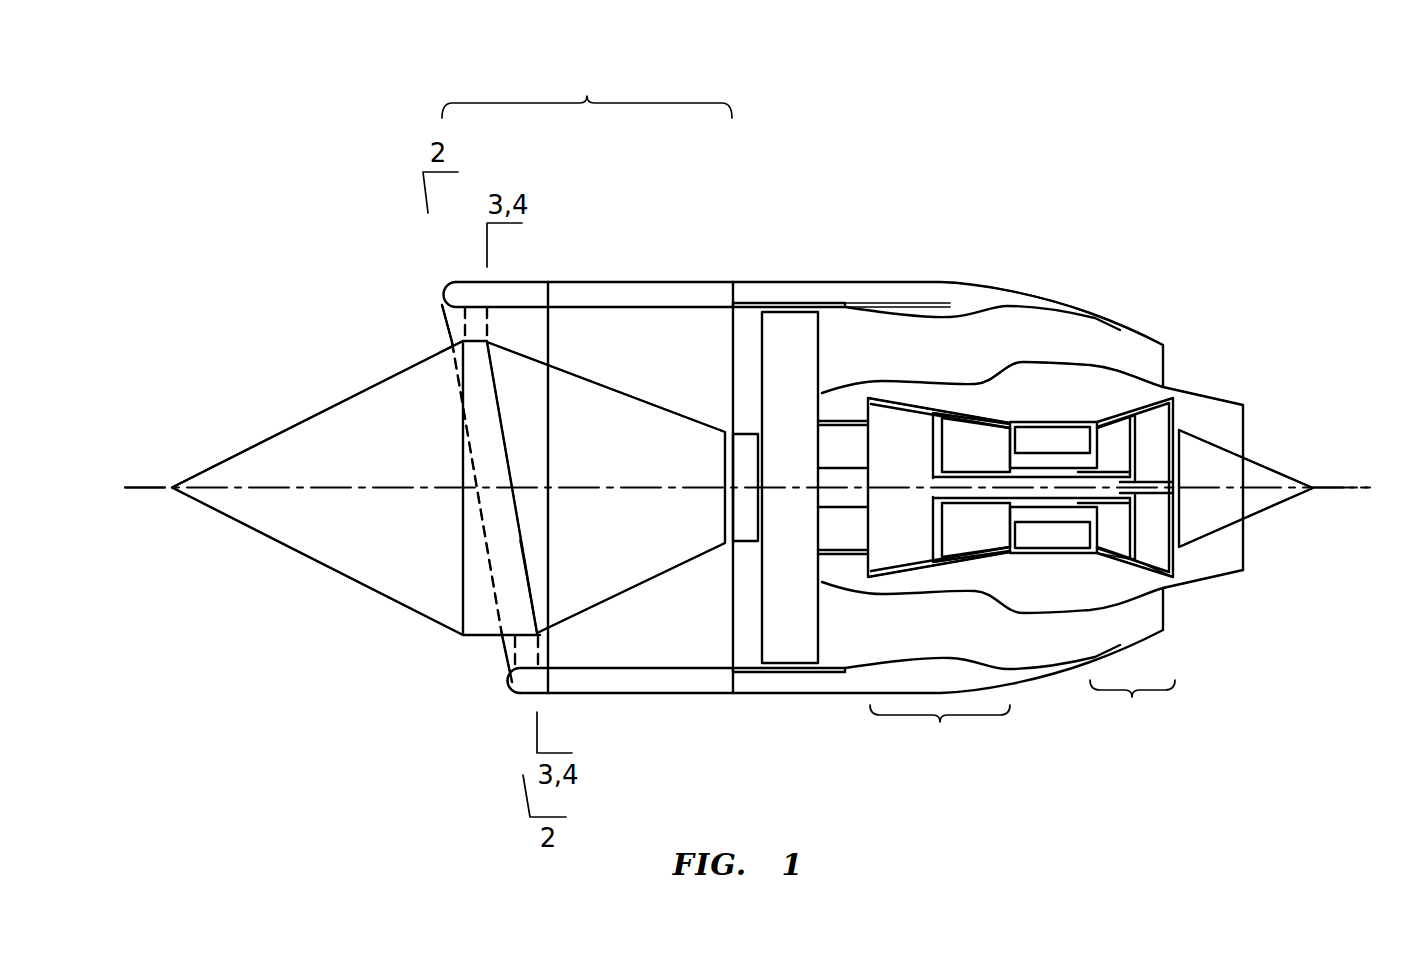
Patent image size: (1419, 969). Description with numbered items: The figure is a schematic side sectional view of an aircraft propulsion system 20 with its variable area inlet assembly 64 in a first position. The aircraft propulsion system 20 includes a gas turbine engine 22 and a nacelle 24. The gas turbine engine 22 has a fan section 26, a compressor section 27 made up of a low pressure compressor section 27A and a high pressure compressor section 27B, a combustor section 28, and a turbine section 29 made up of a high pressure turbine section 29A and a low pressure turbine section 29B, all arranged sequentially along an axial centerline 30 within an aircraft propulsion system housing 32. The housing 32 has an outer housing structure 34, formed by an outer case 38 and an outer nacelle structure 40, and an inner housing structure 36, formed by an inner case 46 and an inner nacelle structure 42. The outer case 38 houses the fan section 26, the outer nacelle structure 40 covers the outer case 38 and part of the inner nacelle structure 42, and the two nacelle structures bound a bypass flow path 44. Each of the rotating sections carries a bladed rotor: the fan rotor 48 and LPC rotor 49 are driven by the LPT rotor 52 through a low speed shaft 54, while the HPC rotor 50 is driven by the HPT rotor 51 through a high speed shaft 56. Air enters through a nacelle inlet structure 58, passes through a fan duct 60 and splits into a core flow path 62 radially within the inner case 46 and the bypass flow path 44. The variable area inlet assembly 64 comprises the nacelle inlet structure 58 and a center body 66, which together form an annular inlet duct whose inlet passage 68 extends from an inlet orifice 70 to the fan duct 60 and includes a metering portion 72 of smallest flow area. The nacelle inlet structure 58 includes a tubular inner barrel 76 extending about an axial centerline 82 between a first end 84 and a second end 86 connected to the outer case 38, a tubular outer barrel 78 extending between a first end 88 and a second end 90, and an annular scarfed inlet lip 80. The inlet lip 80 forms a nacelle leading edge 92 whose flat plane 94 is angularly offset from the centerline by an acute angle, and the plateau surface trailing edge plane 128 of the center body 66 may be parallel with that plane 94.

The aircraft propulsion system 20 is at (1132, 212).
The gas turbine engine 22 is at (738, 600).
The nacelle 24 is at (677, 258).
The fan section 26 is at (831, 656).
The compressor section 27 is at (940, 730).
The low pressure compressor section 27A is at (903, 586).
The high pressure compressor section 27B is at (978, 574).
The combustor section 28 is at (1043, 572).
The turbine section 29 is at (1132, 705).
The high pressure turbine section 29A is at (1099, 572).
The low pressure turbine section 29B is at (1152, 585).
The axial centerline 30 is at (1356, 495).
The aircraft propulsion system housing 32 is at (816, 232).
The outer housing structure 34 is at (831, 262).
The inner housing structure 36 is at (1051, 349).
The outer case 38 is at (765, 302).
The outer nacelle structure 40 is at (882, 278).
The inner nacelle structure 42 is at (1103, 370).
The bypass flow path 44 is at (930, 376).
The inner case 46 is at (1050, 421).
The fan rotor 48 is at (822, 368).
The low pressure compressor rotor 49 is at (903, 396).
The high pressure compressor rotor 50 is at (982, 413).
The high pressure turbine rotor 51 is at (1123, 413).
The low pressure turbine rotor 52 is at (1180, 413).
The low speed shaft 54 is at (1120, 483).
The high speed shaft 56 is at (1130, 470).
The nacelle inlet structure 58 is at (587, 90).
The fan duct 60 is at (752, 674).
The core flow path 62 is at (1222, 418).
The variable area inlet assembly 64 is at (457, 689).
The center body 66 is at (321, 593).
The inlet passage 68 is at (583, 347).
The inlet orifice 70 is at (445, 326).
The metering portion 72 is at (475, 320).
The inner barrel 76 is at (654, 309).
The outer barrel 78 is at (628, 280).
The inlet lip 80 is at (461, 276).
The axial centerline 82 is at (143, 493).
The first end of the inner barrel 84 is at (542, 320).
The second end of the inner barrel 86 is at (738, 345).
The first end of the outer barrel 88 is at (548, 280).
The second end of the outer barrel 90 is at (738, 280).
The nacelle leading edge 92 is at (447, 338).
The flat plane 94 is at (482, 531).
The plateau surface trailing edge plane 128 is at (528, 575).